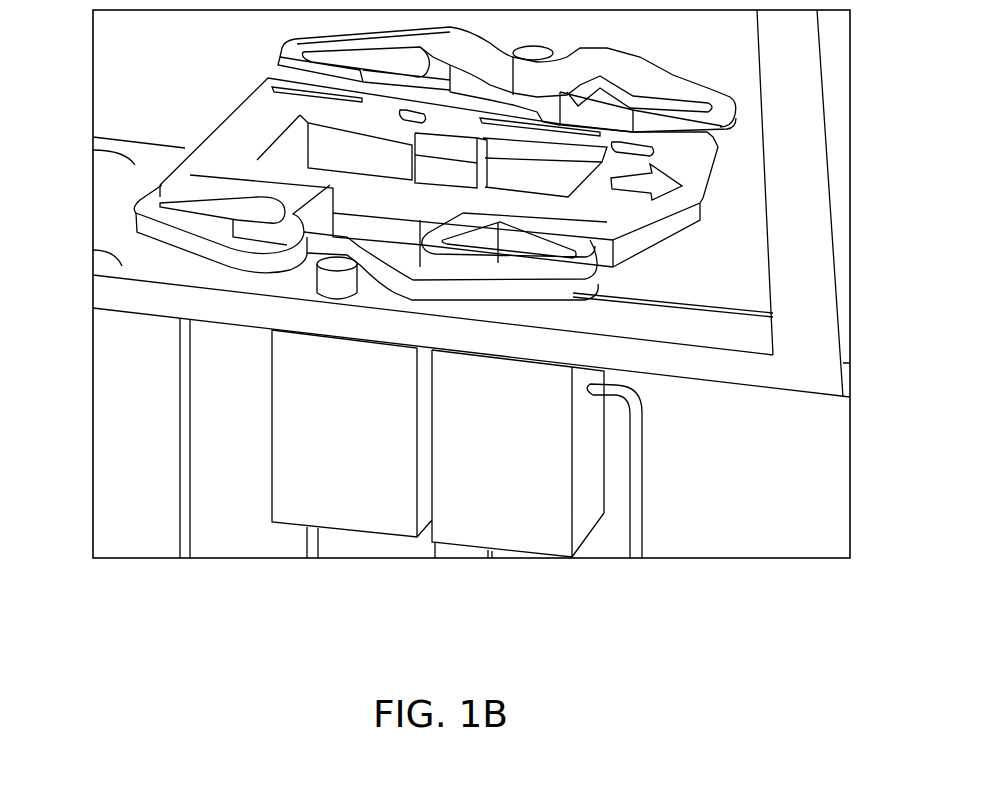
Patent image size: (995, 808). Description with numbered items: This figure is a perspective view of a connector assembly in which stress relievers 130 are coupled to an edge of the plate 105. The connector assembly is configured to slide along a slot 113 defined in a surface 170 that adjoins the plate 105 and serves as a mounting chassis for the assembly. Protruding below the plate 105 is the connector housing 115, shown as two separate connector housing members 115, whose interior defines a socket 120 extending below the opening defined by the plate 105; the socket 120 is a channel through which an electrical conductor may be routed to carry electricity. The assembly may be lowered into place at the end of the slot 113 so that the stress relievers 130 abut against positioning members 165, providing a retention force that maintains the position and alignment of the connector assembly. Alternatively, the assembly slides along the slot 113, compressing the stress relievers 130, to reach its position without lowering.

The plate 105 is at (660, 230).
The slot 113 is at (133, 160).
The connector housing 115 is at (362, 455).
The socket 120 is at (303, 152).
The stress relievers 130 is at (725, 100).
The positioning member 165 is at (542, 48).
The surface 170 is at (120, 262).